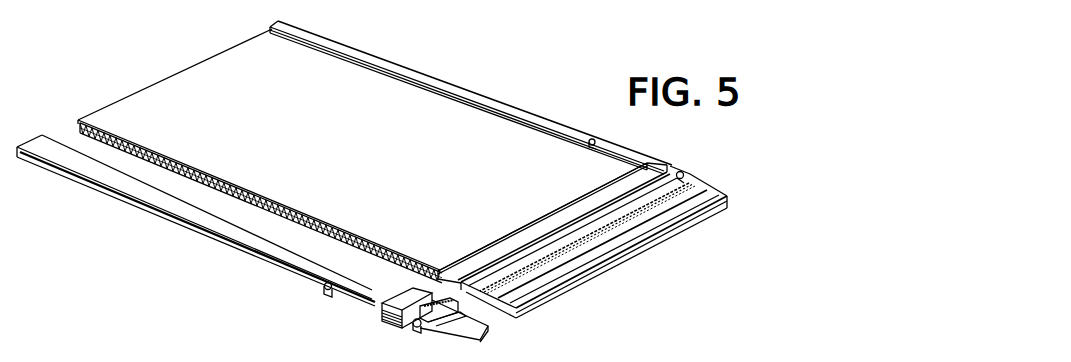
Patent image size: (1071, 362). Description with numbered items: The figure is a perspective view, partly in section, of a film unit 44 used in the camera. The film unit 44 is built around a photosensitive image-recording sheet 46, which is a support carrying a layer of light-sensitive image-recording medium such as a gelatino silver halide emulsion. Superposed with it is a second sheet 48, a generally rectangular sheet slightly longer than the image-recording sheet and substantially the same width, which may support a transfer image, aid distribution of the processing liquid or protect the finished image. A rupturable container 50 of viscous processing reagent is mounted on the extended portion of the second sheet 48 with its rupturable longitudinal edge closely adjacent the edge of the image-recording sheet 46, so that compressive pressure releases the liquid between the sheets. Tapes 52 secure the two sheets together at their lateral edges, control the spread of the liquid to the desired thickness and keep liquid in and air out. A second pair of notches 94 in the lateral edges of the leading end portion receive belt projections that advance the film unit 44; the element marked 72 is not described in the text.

The film unit 44 is at (472, 76).
The photosensitive image-recording sheet 46 is at (200, 75).
The second sheet 48 is at (77, 133).
The rupturable container 50 is at (597, 231).
The tapes 52 is at (503, 107).
The ring fitting 72 is at (597, 140).
The second pair of notches 94 is at (683, 177).